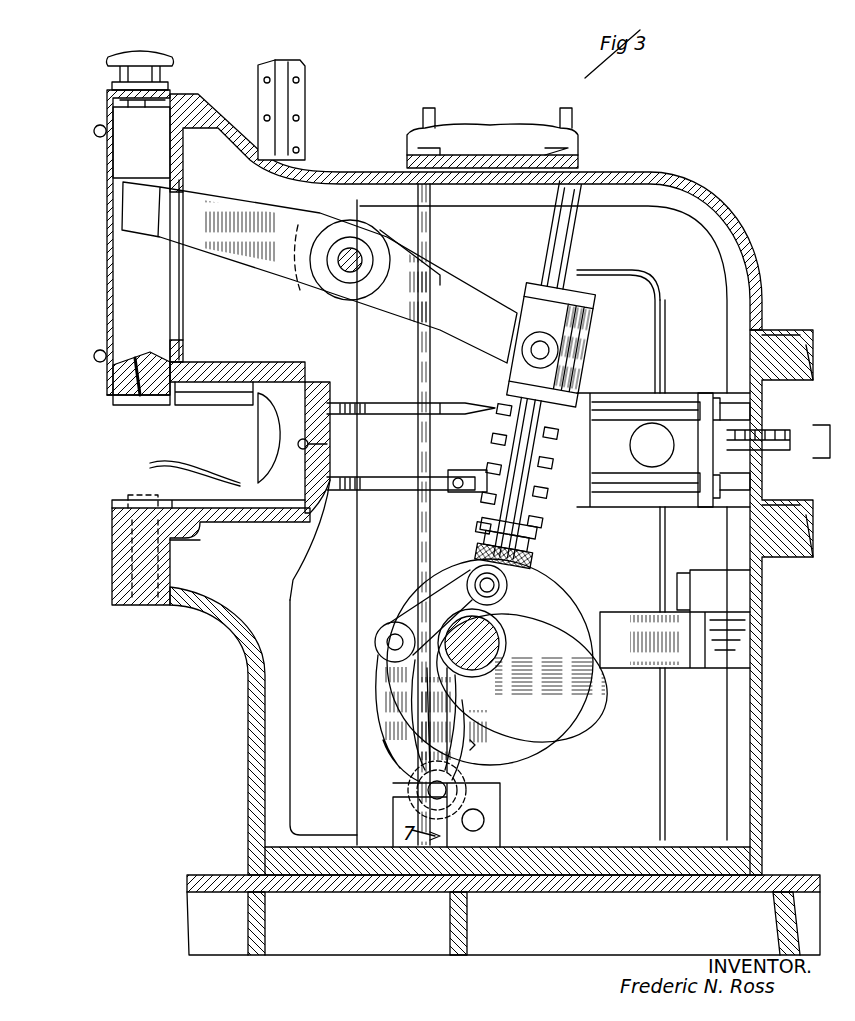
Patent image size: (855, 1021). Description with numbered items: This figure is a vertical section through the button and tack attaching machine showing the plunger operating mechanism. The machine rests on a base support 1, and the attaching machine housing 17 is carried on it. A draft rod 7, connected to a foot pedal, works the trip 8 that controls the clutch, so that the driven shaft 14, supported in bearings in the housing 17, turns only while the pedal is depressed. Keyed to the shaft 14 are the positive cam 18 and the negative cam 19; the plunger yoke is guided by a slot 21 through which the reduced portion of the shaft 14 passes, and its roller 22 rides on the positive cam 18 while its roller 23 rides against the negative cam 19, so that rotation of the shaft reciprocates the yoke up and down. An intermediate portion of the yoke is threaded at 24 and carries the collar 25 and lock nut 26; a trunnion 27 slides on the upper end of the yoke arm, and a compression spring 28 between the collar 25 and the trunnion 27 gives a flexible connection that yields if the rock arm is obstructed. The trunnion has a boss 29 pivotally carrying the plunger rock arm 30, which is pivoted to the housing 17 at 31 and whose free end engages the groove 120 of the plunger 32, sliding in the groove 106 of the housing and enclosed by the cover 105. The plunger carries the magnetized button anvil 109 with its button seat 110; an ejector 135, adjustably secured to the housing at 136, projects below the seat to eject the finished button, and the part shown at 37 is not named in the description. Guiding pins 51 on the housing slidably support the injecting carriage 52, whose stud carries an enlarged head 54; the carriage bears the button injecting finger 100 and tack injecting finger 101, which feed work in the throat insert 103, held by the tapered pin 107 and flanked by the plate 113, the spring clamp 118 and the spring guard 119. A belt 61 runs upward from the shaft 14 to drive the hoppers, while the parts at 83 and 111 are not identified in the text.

The base support 1 is at (352, 957).
The draft rod 7 is at (548, 265).
The trip 8 is at (854, 445).
The shaft 14 is at (492, 645).
The attaching machine housing 17 is at (250, 640).
The positive cam 18 is at (590, 695).
The negative cam 19 is at (560, 568).
The slot 21 is at (475, 730).
The roller 22 is at (525, 570).
The roller 23 is at (466, 790).
The threaded portion 24 is at (440, 513).
The collar 25 is at (470, 530).
The lock nut 26 is at (472, 550).
The trunnion 27 is at (588, 342).
The compression spring 28 is at (528, 482).
The boss 29 is at (560, 358).
The plunger rock arm 30 is at (485, 275).
The pivot 31 is at (350, 250).
The plunger 32 is at (125, 148).
The crank shaft 37 is at (518, 600).
The guiding pins 51 is at (655, 402).
The injecting carriage 52 is at (660, 500).
The enlarged head 54 is at (663, 428).
The belt 61 is at (558, 122).
The bracket 83 is at (300, 96).
The button injecting finger 100 is at (395, 405).
The tack injecting finger 101 is at (392, 477).
The throat insert 103 is at (240, 390).
The cover 105 is at (107, 282).
The groove 106 is at (170, 292).
The tapered pin 107 is at (300, 444).
The button anvil 109 is at (178, 352).
The button seat 110 is at (183, 360).
The lower housing block 111 is at (112, 546).
The plate 113 is at (212, 522).
The spring clamp 118 is at (285, 520).
The spring guard 119 is at (188, 455).
The groove 120 is at (122, 208).
The ejector 135 is at (135, 396).
The securing means 136 is at (160, 75).